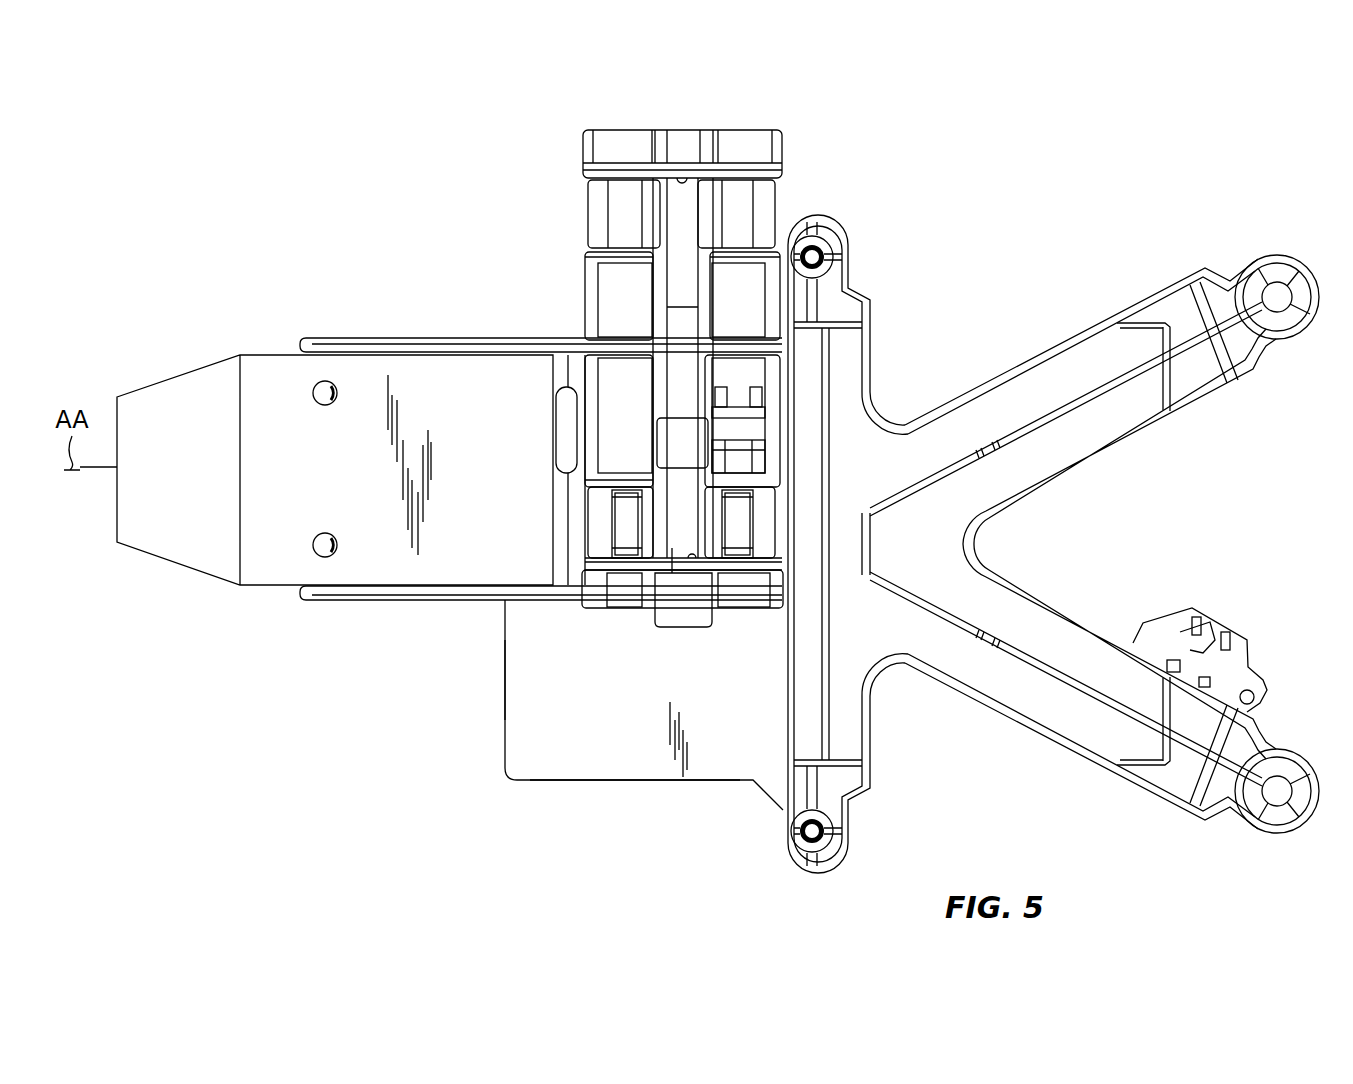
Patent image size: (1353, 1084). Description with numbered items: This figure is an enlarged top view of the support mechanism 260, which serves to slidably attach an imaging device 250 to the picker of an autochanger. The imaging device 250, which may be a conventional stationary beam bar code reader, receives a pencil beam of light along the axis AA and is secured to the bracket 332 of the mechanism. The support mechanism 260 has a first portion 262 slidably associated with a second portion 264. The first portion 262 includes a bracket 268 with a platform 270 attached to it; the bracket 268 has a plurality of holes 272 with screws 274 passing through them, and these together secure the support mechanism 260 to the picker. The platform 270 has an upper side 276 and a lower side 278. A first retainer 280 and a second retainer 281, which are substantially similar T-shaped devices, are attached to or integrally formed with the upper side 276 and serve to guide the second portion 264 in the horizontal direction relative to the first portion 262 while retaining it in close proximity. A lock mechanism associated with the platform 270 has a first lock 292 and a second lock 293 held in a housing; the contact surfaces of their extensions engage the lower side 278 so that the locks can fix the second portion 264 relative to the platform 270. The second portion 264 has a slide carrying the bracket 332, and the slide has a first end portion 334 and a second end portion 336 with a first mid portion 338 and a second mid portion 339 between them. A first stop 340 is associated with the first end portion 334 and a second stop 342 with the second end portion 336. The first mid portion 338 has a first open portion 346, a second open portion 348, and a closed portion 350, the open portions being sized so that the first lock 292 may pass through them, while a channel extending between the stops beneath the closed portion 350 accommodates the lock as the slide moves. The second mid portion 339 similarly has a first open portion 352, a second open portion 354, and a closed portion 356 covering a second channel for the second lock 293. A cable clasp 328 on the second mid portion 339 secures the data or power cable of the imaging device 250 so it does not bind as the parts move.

The imaging device 250 is at (173, 368).
The support mechanism 260 is at (887, 234).
The first portion 262 is at (1022, 354).
The second portion 264 is at (797, 141).
The bracket 268 is at (1025, 725).
The platform 270 is at (580, 795).
The holes 272 is at (1270, 307).
The screws 274 is at (1284, 544).
The upper side 276 is at (555, 729).
The lower side 278 is at (505, 680).
The first retainer 280 is at (686, 614).
The second retainer 281 is at (672, 580).
The first lock 292 is at (620, 540).
The second lock 293 is at (755, 540).
The cable clasp 328 is at (735, 415).
The bracket 332 is at (348, 600).
The first end portion 334 is at (585, 152).
The second end portion 336 is at (876, 650).
The first mid portion 338 is at (627, 250).
The second mid portion 339 is at (742, 250).
The first stop 340 is at (686, 176).
The second stop 342 is at (710, 623).
The first open portion 346 is at (588, 205).
The second open portion 348 is at (588, 520).
The closed portion 350 is at (585, 374).
The first open portion 352 is at (780, 208).
The second open portion 354 is at (782, 525).
The closed portion 356 is at (782, 376).